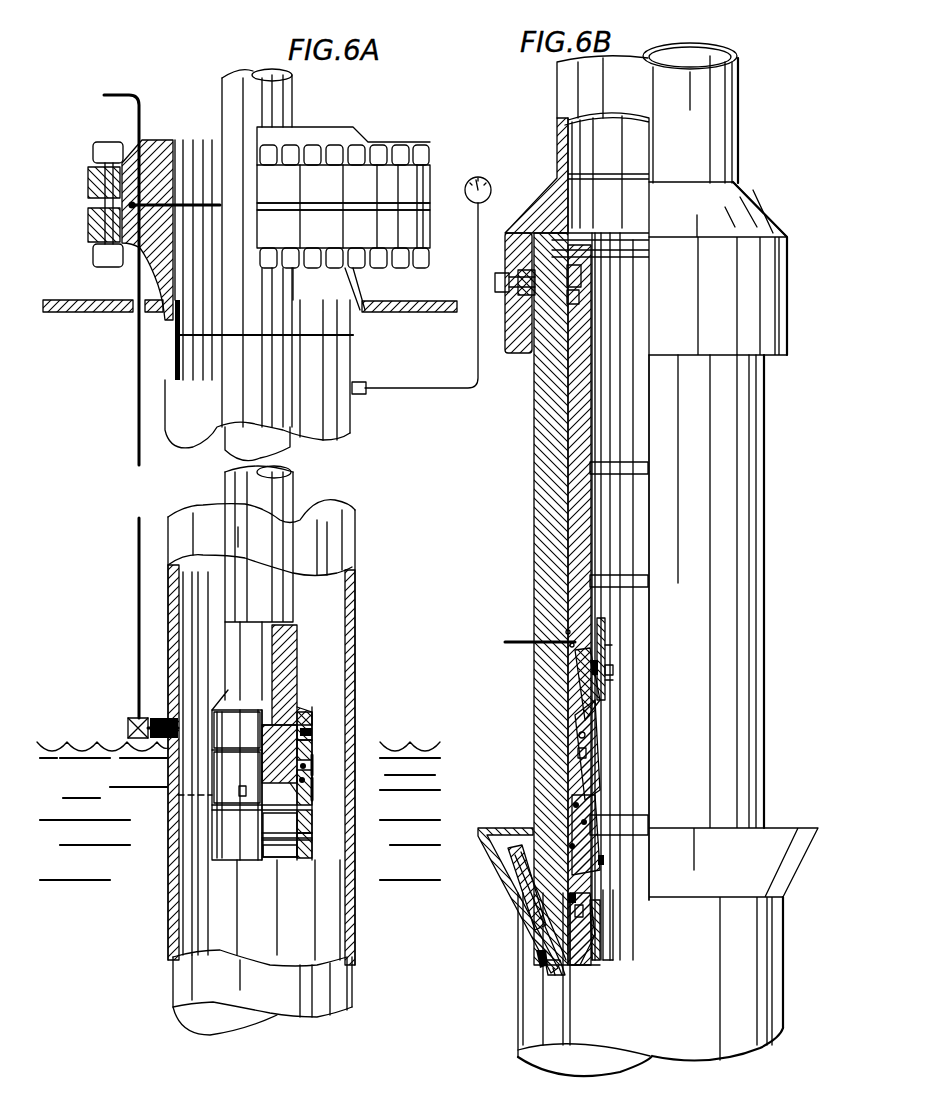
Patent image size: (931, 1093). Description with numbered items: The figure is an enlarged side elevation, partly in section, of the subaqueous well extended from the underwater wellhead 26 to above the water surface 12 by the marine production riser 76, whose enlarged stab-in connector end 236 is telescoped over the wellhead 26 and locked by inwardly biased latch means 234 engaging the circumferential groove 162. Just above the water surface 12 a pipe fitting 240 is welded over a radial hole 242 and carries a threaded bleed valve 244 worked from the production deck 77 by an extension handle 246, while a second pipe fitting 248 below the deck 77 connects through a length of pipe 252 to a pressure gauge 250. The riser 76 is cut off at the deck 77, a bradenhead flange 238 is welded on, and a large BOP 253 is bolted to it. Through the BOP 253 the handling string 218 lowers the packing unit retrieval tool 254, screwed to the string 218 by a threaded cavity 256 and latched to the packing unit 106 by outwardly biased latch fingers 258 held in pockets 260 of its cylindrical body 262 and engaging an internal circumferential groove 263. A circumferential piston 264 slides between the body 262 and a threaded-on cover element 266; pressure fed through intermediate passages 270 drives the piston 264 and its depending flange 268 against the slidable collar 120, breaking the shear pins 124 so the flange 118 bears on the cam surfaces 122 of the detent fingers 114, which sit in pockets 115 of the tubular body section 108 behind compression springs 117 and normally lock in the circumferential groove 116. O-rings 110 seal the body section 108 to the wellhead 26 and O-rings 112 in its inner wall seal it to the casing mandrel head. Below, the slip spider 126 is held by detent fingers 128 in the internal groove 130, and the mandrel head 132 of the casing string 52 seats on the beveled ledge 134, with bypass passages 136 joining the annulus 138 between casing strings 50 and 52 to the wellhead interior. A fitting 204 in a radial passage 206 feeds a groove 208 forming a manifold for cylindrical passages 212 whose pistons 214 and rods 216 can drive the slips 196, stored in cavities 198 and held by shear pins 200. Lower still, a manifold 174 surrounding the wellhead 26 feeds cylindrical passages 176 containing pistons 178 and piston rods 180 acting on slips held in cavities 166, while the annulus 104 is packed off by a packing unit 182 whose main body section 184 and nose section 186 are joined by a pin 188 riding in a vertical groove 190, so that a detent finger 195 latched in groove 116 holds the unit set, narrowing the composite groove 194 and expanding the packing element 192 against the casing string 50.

In FIG. 6A, the BOP 253 is at (158, 147).
In FIG. 6A, the bradenhead flange 238 is at (88, 228).
In FIG. 6A, the production deck 77 is at (72, 313).
In FIG. 6A, the extension handle 246 is at (137, 552).
In FIG. 6A, the pipe fitting 240 is at (150, 722).
In FIG. 6A, the threaded bleed valve 244 is at (128, 731).
In FIG. 6A, the water surface 12 is at (60, 745).
In FIG. 6A, the radial hole 242 is at (172, 762).
In FIG. 6A, the detent fingers 114 is at (200, 798).
In FIG. 6A, the packing unit retrieval tool 254 is at (221, 712).
In FIG. 6A, the threaded cavity 256 is at (278, 668).
In FIG. 6A, the intermediate passages 270 is at (290, 710).
In FIG. 6A, the cylindrical cover element 266 is at (312, 712).
In FIG. 6A, the circumferential piston 264 is at (312, 730).
In FIG. 6A, the shear pins 124 is at (307, 755).
In FIG. 6A, the slidable collar 120 is at (308, 768).
In FIG. 6A, the pockets 115 is at (345, 760).
In FIG. 6A, the cam surfaces 122 is at (338, 776).
In FIG. 6A, the depending circumferential flange 118 is at (307, 780).
In FIG. 6A, the compression spring 117 is at (340, 791).
In FIG. 6A, the O-rings 110 is at (315, 808).
In FIG. 6A, the tubular body section 108 is at (315, 824).
In FIG. 6A, the packing unit 106 is at (327, 844).
In FIG. 6A, the depending flange 268 is at (297, 750).
In FIG. 6A, the latch fingers 258 is at (290, 775).
In FIG. 6A, the pockets 260 is at (295, 790).
In FIG. 6A, the internal circumferential groove 263 is at (303, 795).
In FIG. 6A, the cylindrical body 262 is at (288, 835).
In FIG. 6A, the O-rings 112 is at (290, 838).
In FIG. 6A, the handling string 218 is at (293, 487).
In FIG. 6A, the second pipe fitting 248 is at (360, 392).
In FIG. 6A, the length of pipe 252 is at (430, 392).
In FIG. 6A, the pressure gauge 250 is at (482, 185).
In FIG. 6A, the marine production riser 76 is at (358, 980).
In FIG. 6B, the marine production riser 76 is at (742, 132).
In FIG. 6B, the stab-in connector end 236 is at (788, 270).
In FIG. 6B, the latch means 234 is at (525, 290).
In FIG. 6B, the circumferential groove 162 is at (530, 340).
In FIG. 6B, the circumferential internal groove 130 is at (535, 355).
In FIG. 6B, the detent fingers 128 is at (535, 338).
In FIG. 6B, the slip spider 126 is at (538, 452).
In FIG. 6B, the underwater wellhead 26 is at (752, 518).
In FIG. 6B, the annulus 138 is at (600, 740).
In FIG. 6B, the mandrel head 132 is at (605, 630).
In FIG. 6B, the pistons 214 is at (605, 650).
In FIG. 6B, the fluid bypass passages 136 is at (610, 670).
In FIG. 6B, the beveled circumferential ledge 134 is at (612, 680).
In FIG. 6B, the circumferential groove 208 is at (568, 640).
In FIG. 6B, the radial passage 206 is at (572, 640).
In FIG. 6B, the fitting 204 is at (545, 640).
In FIG. 6B, the cylindrical passages 212 is at (572, 672).
In FIG. 6B, the rods 216 is at (582, 690).
In FIG. 6B, the slips 196 is at (577, 717).
In FIG. 6B, the cavities 198 is at (580, 732).
In FIG. 6B, the shear pins 200 is at (582, 748).
In FIG. 6B, the packing unit 182 is at (576, 800).
In FIG. 6B, the main body section 184 is at (588, 822).
In FIG. 6B, the circumferential groove 116 is at (480, 828).
In FIG. 6B, the manifold 174 is at (505, 858).
In FIG. 6B, the pin 188 is at (572, 900).
In FIG. 6B, the vertical groove 190 is at (580, 915).
In FIG. 6B, the cylindrical passages 176 is at (530, 935).
In FIG. 6B, the piston 178 is at (537, 958).
In FIG. 6B, the cavities 166 is at (545, 965).
In FIG. 6B, the piston rod 180 is at (552, 968).
In FIG. 6B, the nose section 186 is at (558, 965).
In FIG. 6B, the detent finger 195 is at (606, 860).
In FIG. 6B, the expandable packing element 192 is at (600, 905).
In FIG. 6B, the composite groove 194 is at (600, 920).
In FIG. 6B, the casing string 52 is at (612, 940).
In FIG. 6B, the casing string 50 is at (610, 965).
In FIG. 6B, the annulus 104 is at (585, 968).